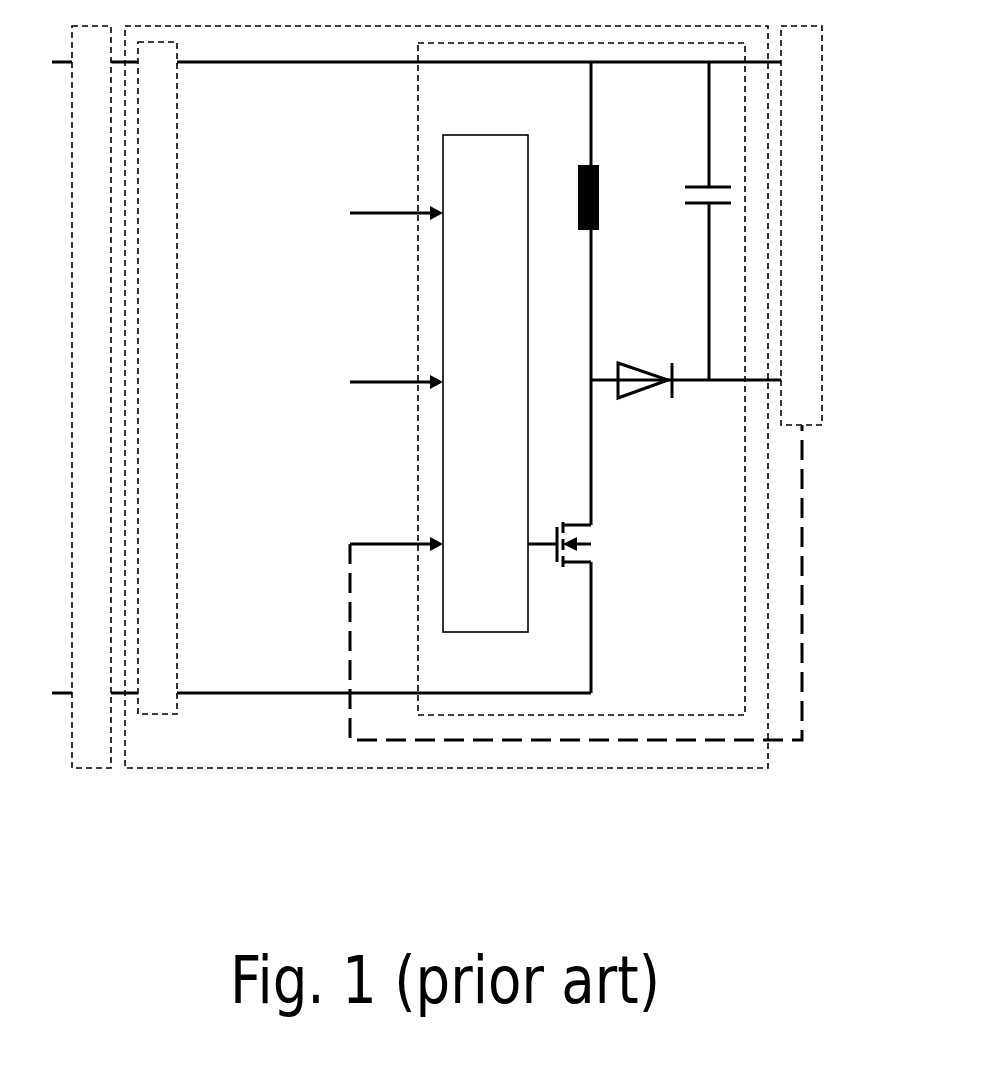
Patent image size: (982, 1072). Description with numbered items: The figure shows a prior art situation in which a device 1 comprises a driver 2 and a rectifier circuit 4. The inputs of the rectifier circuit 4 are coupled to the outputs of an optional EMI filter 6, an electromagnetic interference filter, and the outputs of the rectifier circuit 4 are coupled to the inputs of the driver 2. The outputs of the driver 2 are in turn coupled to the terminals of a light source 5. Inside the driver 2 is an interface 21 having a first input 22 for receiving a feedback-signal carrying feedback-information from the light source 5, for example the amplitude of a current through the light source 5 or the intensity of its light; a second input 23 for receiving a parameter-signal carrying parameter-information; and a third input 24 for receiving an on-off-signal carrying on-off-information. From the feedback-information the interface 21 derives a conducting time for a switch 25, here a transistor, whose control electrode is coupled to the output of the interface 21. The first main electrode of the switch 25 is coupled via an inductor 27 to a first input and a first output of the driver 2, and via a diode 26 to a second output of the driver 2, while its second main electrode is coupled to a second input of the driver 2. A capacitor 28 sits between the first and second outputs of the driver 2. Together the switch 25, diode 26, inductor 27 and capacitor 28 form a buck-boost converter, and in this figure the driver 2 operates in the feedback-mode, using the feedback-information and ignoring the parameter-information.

The device 1 is at (725, 760).
The driver 2 is at (418, 128).
The rectifier circuit 4 is at (157, 714).
The light source 5 is at (815, 428).
The EMI filter 6 is at (91, 760).
The interface 21 is at (484, 632).
The first input 22 is at (421, 544).
The second input 23 is at (421, 382).
The third input 24 is at (421, 213).
The switch 25 is at (581, 544).
The diode 26 is at (645, 400).
The inductor 27 is at (605, 204).
The capacitor 28 is at (698, 215).